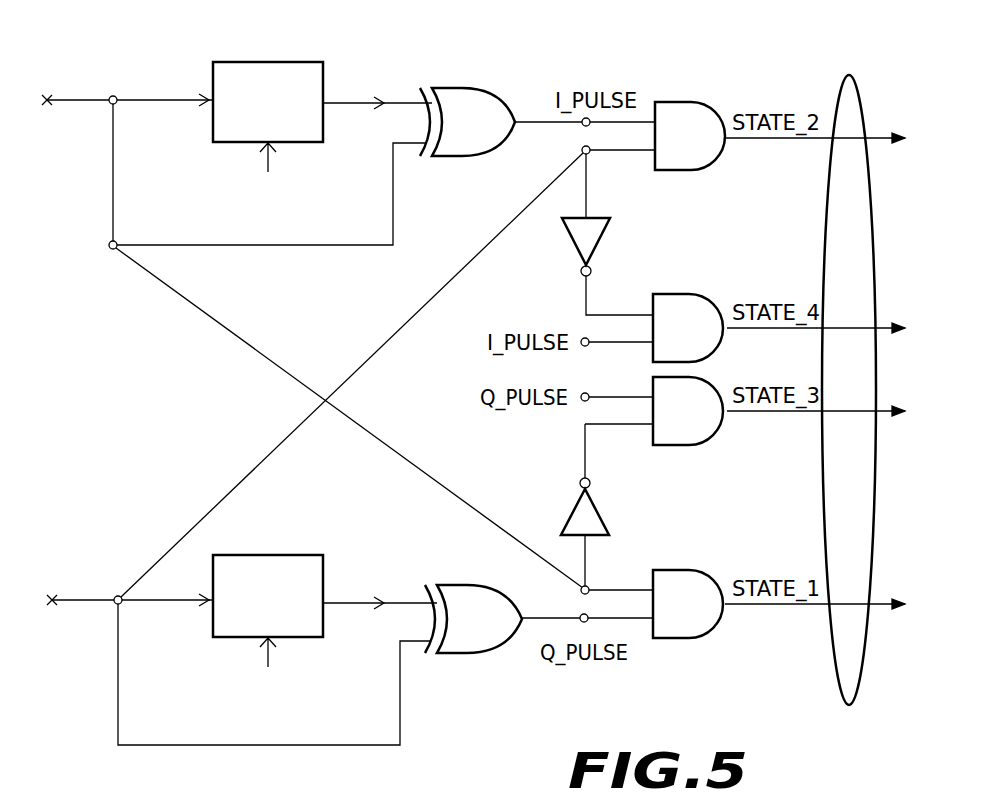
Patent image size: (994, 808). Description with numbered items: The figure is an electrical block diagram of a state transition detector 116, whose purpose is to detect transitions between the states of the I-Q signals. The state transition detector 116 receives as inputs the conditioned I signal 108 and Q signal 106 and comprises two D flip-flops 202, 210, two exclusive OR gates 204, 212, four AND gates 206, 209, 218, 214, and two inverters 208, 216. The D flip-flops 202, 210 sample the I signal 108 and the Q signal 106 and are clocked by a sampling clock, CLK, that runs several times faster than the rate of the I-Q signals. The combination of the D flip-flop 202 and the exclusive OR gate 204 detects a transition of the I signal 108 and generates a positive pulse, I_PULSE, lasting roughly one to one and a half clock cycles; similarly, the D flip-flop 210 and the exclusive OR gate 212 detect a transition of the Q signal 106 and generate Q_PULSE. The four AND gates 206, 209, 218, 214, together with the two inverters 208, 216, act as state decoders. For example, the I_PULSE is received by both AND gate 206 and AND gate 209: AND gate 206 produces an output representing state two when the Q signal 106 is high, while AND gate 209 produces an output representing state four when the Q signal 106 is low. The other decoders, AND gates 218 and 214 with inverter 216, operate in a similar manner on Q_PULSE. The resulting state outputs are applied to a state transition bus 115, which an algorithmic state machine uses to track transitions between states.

The Q signal 106 is at (93, 603).
The I signal 108 is at (83, 104).
The state transition bus 115 is at (850, 75).
The state transition detector 116 is at (827, 748).
The D flip-flop 202 is at (280, 62).
The exclusive OR gate 204 is at (470, 88).
The AND gate 206 is at (683, 102).
The inverter 208 is at (605, 240).
The AND gate 209 is at (700, 294).
The D flip-flop 210 is at (272, 555).
The exclusive OR gate 212 is at (478, 585).
The AND gate 214 is at (697, 570).
The inverter 216 is at (575, 505).
The AND gate 218 is at (700, 446).